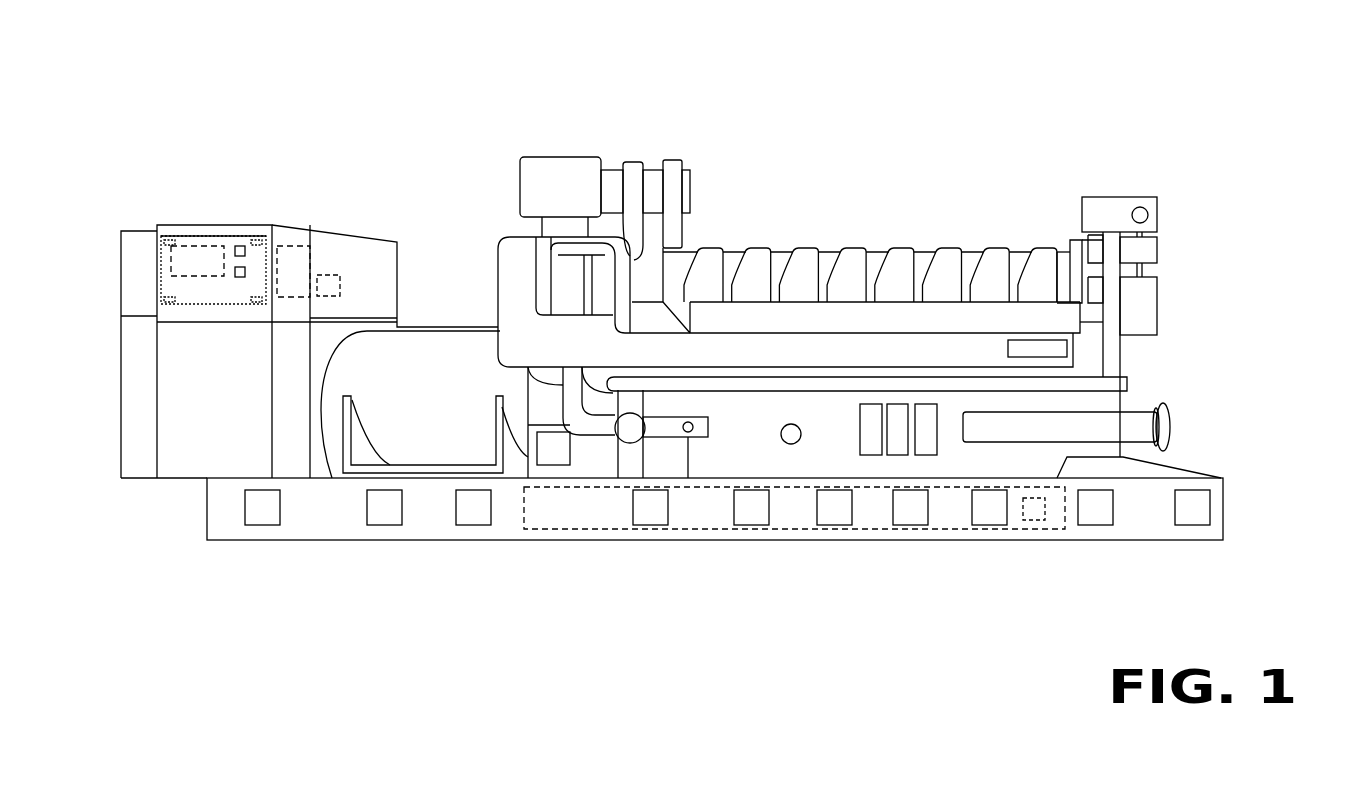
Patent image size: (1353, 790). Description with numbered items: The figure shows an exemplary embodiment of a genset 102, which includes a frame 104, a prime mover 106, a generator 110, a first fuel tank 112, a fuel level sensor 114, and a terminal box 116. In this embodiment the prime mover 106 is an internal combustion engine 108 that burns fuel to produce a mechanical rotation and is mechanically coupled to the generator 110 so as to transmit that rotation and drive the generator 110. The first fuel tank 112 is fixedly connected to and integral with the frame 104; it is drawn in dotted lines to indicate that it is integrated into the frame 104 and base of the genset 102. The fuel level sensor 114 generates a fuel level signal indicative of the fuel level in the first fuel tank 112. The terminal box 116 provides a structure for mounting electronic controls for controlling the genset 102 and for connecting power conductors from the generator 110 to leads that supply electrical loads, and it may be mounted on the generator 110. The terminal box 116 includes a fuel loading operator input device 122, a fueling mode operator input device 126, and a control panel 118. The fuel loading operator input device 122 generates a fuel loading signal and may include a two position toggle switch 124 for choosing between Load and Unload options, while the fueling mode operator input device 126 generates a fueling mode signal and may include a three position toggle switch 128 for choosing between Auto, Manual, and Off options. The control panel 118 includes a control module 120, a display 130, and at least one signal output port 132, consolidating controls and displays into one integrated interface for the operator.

The genset 102 is at (991, 53).
The frame 104 is at (315, 527).
The prime mover 106 is at (912, 223).
The internal combustion engine 108 is at (772, 257).
The generator 110 is at (443, 432).
The first fuel tank 112 is at (800, 507).
The fuel level sensor 114 is at (1030, 507).
The terminal box 116 is at (128, 242).
The control panel 118 is at (180, 287).
The control module 120 is at (298, 267).
The fuel loading operator input device 122 is at (232, 305).
The two position toggle switch 124 is at (243, 268).
The fueling mode operator input device 126 is at (223, 233).
The three position toggle switch 128 is at (243, 243).
The display 130 is at (182, 253).
The signal output port 132 is at (333, 283).